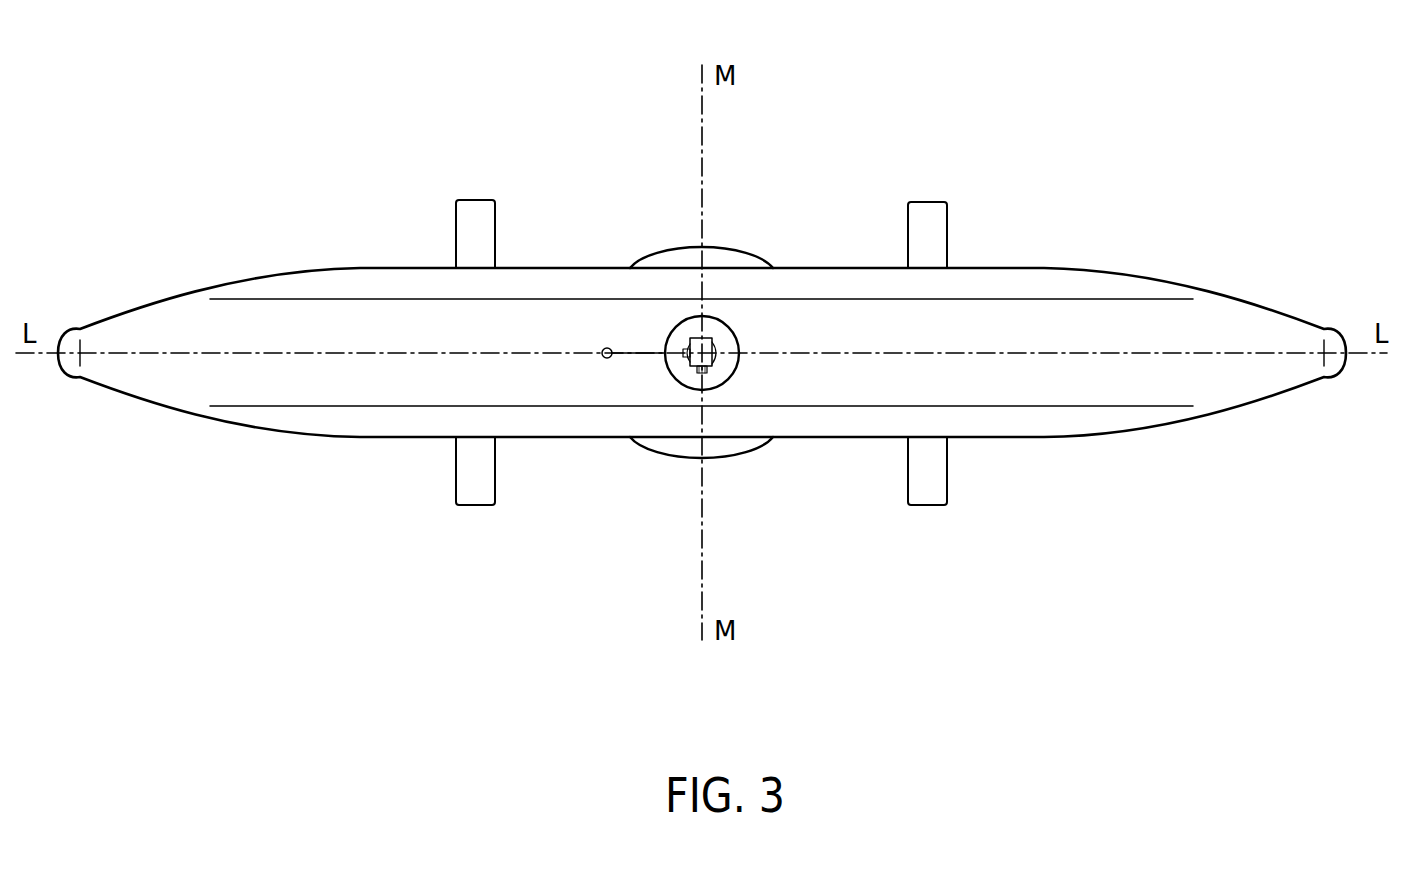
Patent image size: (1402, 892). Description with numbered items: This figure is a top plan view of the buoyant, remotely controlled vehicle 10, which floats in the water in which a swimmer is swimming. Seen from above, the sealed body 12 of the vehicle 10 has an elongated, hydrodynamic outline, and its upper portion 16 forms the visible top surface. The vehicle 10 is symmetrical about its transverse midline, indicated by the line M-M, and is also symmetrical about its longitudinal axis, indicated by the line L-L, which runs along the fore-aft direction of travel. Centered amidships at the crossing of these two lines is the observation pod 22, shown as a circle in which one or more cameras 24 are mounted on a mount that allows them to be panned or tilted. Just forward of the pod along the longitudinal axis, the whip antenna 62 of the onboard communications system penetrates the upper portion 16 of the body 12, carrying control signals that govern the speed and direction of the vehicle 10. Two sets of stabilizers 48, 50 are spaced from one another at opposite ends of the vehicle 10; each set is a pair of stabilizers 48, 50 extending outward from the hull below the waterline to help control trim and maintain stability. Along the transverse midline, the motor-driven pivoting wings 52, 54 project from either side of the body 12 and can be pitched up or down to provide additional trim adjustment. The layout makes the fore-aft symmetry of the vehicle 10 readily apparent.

The vehicle 10 is at (284, 131).
The body 12 is at (1143, 270).
The upper portion 16 is at (890, 312).
The observation pod 22 is at (731, 328).
The cameras 24 is at (716, 364).
The stabilizers 48 is at (456, 229).
The stabilizers 50 is at (947, 225).
The pivoting wing 52 is at (726, 452).
The pivoting wing 54 is at (733, 253).
The whip antenna 62 is at (604, 359).